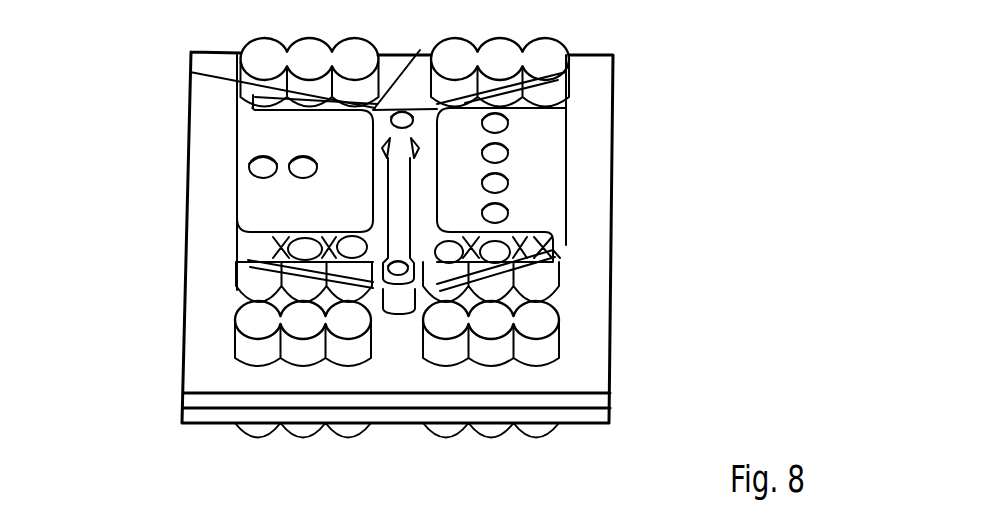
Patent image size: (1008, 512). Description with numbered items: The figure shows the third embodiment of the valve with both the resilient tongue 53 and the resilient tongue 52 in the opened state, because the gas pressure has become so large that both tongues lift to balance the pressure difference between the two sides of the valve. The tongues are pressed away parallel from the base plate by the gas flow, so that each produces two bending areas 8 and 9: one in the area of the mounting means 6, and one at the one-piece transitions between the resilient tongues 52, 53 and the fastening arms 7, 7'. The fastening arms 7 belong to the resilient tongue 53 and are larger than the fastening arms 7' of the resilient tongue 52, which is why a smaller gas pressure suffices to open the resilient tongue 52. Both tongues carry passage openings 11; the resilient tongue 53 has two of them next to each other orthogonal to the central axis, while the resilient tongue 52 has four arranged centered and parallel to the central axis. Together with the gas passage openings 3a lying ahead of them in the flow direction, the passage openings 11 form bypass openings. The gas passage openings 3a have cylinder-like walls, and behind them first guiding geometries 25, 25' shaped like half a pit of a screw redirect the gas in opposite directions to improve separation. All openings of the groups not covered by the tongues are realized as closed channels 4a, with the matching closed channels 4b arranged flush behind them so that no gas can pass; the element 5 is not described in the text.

The gas passage opening 3a is at (255, 268).
The closed channel 4a is at (547, 322).
The closed channel 4b is at (540, 432).
The housing part 5 is at (253, 95).
The mounting means 6 is at (433, 108).
The fastening arm 7 is at (230, 188).
The fastening arm 7' is at (590, 254).
The bending area 8 is at (404, 112).
The bending area 9 is at (556, 252).
The passage opening 11 is at (250, 165).
The first guiding geometry 25 is at (214, 227).
The first guiding geometry 25' is at (498, 370).
The resilient tongue 52 is at (520, 195).
The resilient tongue 53 is at (297, 128).